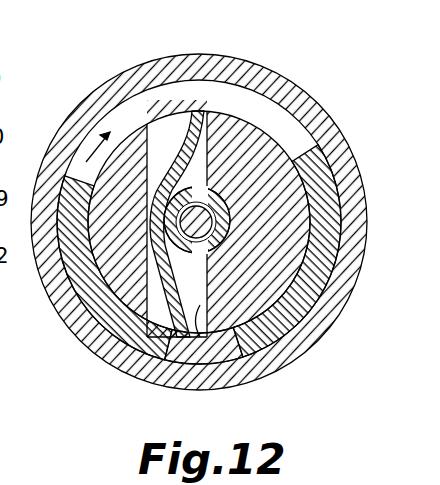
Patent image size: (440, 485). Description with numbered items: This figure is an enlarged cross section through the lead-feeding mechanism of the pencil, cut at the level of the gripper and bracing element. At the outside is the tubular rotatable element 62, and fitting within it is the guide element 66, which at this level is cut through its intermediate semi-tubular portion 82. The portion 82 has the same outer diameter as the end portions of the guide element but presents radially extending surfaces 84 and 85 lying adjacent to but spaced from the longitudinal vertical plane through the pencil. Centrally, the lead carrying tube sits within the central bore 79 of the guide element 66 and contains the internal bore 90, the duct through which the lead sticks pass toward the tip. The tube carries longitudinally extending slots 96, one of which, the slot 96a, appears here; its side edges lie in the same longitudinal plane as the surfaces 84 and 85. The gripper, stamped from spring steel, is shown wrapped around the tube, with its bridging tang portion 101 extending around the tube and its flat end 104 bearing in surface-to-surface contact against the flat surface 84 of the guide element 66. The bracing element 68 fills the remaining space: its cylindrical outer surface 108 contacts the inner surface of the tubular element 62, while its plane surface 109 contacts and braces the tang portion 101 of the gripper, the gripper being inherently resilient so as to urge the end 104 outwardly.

The rotatable element 62 is at (322, 264).
The guide element 66 is at (300, 146).
The bracing element 68 is at (137, 137).
The central bore 79 is at (222, 248).
The intermediate semi-tubular portion 82 is at (290, 188).
The radially extending surface 84 is at (184, 175).
The radially extending surface 85 is at (245, 384).
The internal bore 90 is at (206, 221).
The rotor 96 is at (223, 189).
The longitudinally extending slot 96a is at (197, 250).
The bridging tang portion 101 is at (162, 253).
The flat end 104 is at (202, 105).
The cylindrical outer surface 108 is at (120, 133).
The plane surface 109 is at (147, 128).